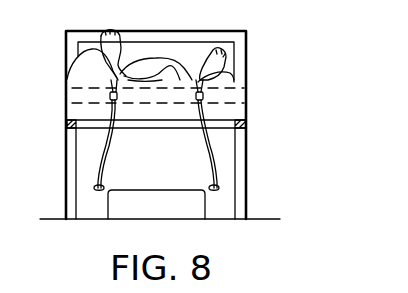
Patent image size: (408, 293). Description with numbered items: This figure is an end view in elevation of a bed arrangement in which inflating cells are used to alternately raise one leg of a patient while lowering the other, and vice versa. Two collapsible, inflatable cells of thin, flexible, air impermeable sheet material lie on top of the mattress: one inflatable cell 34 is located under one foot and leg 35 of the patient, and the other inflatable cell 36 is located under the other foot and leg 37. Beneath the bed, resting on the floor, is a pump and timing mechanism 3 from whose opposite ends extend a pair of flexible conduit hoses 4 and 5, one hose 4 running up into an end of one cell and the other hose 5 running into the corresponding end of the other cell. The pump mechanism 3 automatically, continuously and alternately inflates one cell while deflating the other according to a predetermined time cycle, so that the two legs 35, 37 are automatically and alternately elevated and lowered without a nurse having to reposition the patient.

The pump and timing mechanism 3 is at (112, 216).
The flexible conduit hose 4 is at (108, 147).
The flexible conduit hose 5 is at (208, 161).
The inflatable cell 34 is at (72, 68).
The foot and leg 35 is at (119, 40).
The inflatable cell 36 is at (233, 81).
The foot and leg 37 is at (222, 72).